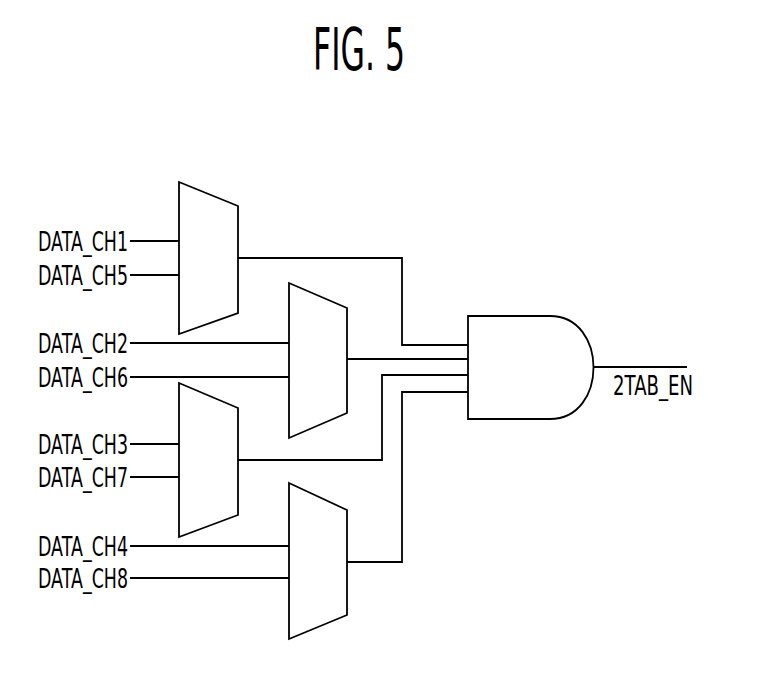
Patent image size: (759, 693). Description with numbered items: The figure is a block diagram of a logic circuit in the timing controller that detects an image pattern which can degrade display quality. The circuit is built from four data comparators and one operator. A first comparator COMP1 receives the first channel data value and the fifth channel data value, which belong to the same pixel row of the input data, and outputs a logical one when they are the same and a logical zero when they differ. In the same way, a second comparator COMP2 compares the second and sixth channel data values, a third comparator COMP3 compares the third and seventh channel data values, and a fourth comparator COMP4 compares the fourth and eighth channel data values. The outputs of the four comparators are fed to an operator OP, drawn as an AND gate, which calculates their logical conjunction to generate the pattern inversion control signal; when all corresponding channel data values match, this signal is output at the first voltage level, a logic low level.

The first comparator COMP1 is at (208, 191).
The second comparator COMP2 is at (318, 292).
The third comparator COMP3 is at (208, 530).
The fourth comparator COMP4 is at (318, 628).
The operator OP is at (510, 316).